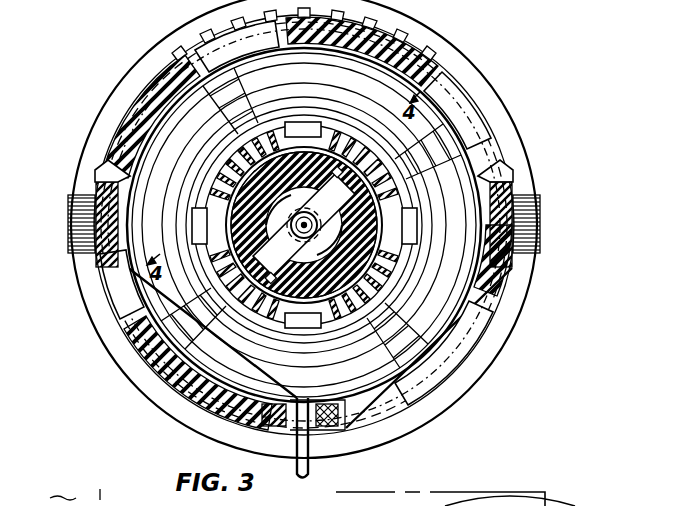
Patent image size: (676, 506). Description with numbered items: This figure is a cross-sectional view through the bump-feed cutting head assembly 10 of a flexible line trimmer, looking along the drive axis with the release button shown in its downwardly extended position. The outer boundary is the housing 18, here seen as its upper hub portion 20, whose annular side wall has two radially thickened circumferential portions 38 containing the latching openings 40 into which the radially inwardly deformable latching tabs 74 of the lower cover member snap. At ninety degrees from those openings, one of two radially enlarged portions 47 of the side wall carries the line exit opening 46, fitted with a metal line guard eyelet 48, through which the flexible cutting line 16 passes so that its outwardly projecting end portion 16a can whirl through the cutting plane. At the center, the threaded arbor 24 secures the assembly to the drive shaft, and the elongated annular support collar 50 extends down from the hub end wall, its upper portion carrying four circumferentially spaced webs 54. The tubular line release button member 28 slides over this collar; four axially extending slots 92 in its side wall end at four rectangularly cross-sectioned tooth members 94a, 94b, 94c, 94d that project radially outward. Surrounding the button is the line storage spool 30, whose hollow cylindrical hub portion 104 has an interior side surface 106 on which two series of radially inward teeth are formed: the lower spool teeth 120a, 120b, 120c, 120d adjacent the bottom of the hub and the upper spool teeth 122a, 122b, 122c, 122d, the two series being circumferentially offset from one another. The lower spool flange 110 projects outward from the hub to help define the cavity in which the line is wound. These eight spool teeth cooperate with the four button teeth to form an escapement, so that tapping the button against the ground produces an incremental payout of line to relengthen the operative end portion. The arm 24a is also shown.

The cutting head assembly 10 is at (505, 37).
The flexible cutting line 16 is at (462, 173).
The outwardly projecting end portion of cutting line 16a is at (312, 469).
The housing 18 is at (157, 40).
The upper hub portion 20 is at (63, 497).
The threaded arbor 24 is at (404, 193).
The clutch member arm 24a is at (200, 345).
The line release button member 28 is at (405, 290).
The line storage spool 30 is at (226, 108).
The radially thickened circumferential portions of hub side wall 38 is at (96, 160).
The latching openings 40 is at (515, 193).
The line exit opening 46 is at (245, 446).
The radially enlarged portions of hub side wall 47 is at (370, 0).
The line guard eyelet 48 is at (322, 398).
The annular support collar 50 is at (403, 318).
The webs 54 is at (267, 135).
The latching tabs 74 is at (513, 231).
The axially extending slots 92 is at (310, 138).
The tooth member 94a is at (200, 218).
The tooth member 94b is at (331, 132).
The tooth member 94c is at (395, 230).
The tooth member 94d is at (353, 344).
The spool hub portion 104 is at (206, 155).
The interior side surface of spool hub 106 is at (212, 140).
The lower spool flange 110 is at (112, 346).
The lower spool tooth 120a is at (190, 170).
The lower spool tooth 120b is at (420, 64).
The lower spool tooth 120c is at (514, 270).
The lower spool tooth 120d is at (174, 397).
The upper spool tooth 122a is at (135, 308).
The upper spool tooth 122b is at (243, 128).
The upper spool tooth 122c is at (455, 165).
The upper spool tooth 122d is at (478, 372).